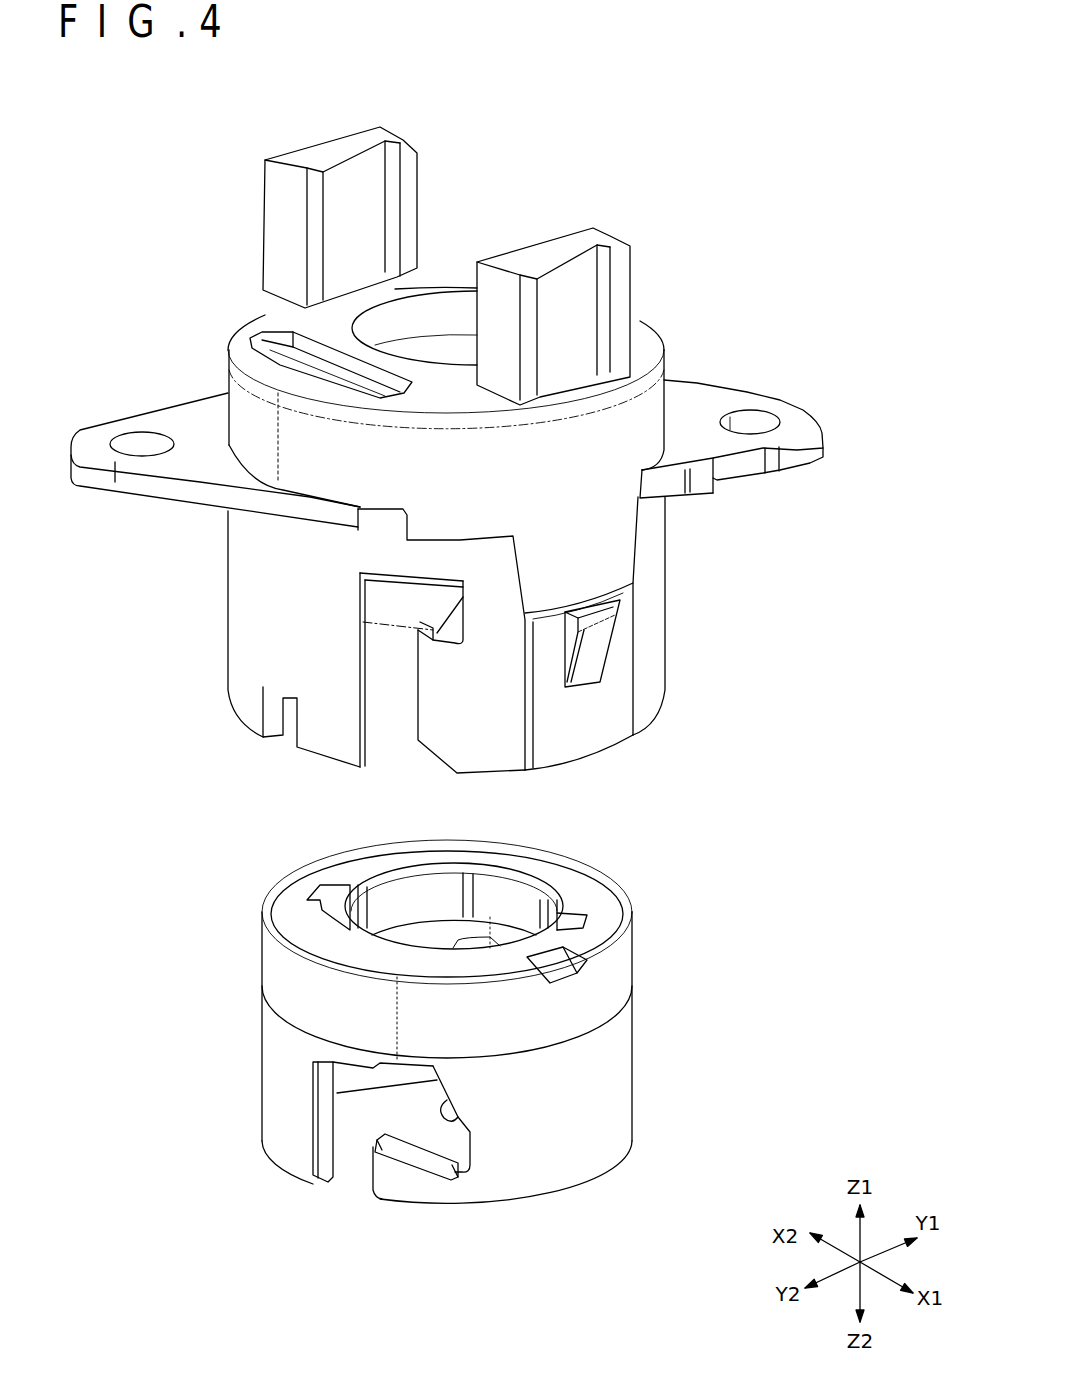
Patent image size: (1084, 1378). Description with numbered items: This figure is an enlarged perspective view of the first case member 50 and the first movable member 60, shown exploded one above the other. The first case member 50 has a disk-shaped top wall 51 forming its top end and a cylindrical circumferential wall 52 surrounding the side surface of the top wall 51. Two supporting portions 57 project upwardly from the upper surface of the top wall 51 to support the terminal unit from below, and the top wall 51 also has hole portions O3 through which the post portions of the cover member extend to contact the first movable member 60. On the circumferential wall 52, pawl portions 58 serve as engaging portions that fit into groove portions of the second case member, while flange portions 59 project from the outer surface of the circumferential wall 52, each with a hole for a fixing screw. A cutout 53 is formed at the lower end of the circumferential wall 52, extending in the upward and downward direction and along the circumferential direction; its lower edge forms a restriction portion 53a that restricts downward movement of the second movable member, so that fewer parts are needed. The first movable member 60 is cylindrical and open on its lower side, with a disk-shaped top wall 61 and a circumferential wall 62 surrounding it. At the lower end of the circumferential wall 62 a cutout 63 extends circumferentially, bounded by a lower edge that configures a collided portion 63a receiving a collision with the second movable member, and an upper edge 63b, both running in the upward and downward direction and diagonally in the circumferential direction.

The first case member 50 is at (447, 481).
The top wall 51 is at (445, 263).
The circumferential wall 52 is at (235, 605).
The cutout 53 is at (388, 738).
The restriction portion 53a is at (437, 633).
The supporting portions 57 is at (417, 157).
The pawl portions 58 is at (600, 646).
The flange portions 59 is at (190, 418).
The hole portions O3 is at (277, 345).
The first movable member 60 is at (445, 1032).
The top wall 61 is at (560, 872).
The circumferential wall 62 is at (263, 1093).
The cutout 63 is at (421, 1161).
The collided portion 63a is at (418, 1147).
The upper edge 63b is at (458, 1108).